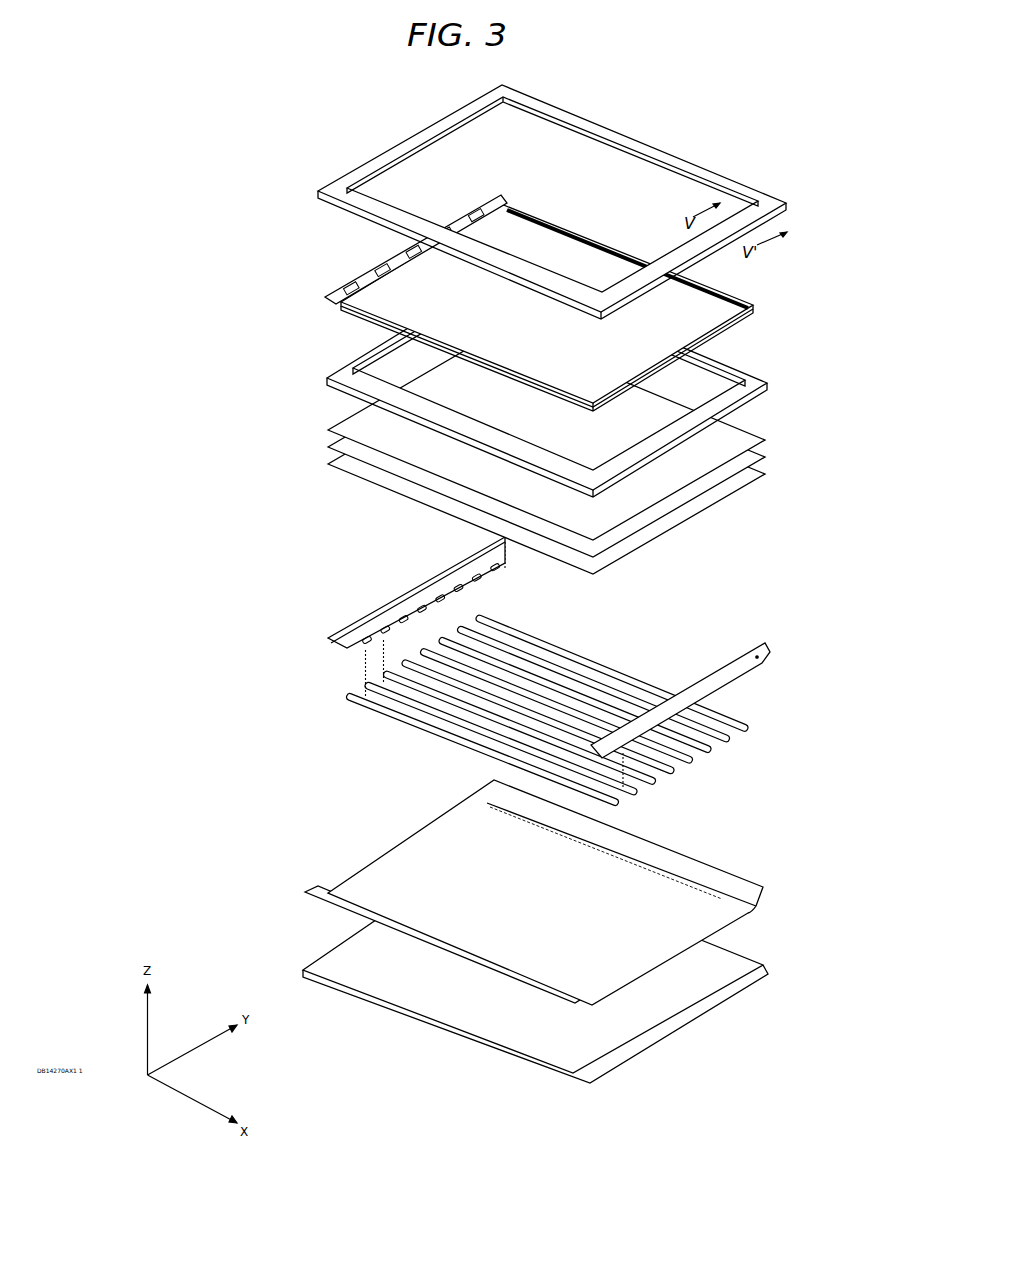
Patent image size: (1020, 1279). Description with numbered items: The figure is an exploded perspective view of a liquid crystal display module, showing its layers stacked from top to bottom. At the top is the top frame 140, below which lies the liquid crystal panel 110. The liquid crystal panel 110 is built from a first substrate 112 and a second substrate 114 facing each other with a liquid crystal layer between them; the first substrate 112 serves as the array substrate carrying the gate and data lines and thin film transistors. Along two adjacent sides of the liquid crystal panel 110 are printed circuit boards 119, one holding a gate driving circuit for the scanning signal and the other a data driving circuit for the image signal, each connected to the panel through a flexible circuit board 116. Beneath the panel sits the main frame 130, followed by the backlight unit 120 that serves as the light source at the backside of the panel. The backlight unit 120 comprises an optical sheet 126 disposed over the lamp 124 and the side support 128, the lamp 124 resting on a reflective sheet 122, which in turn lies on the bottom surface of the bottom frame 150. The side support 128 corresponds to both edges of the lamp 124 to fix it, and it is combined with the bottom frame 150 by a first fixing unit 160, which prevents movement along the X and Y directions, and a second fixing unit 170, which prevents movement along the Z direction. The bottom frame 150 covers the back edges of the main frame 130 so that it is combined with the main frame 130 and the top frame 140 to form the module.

The liquid crystal panel 110 is at (612, 303).
The first substrate 112 is at (722, 335).
The second substrate 114 is at (703, 317).
The flexible circuit board 116 is at (747, 300).
The printed circuit board 119 is at (717, 288).
The backlight unit 120 is at (834, 928).
The reflective sheet 122 is at (722, 878).
The lamp 124 is at (727, 718).
The optical sheet 126 is at (782, 437).
The side support 128 is at (713, 667).
The main frame 130 is at (323, 382).
The top frame 140 is at (350, 188).
The bottom frame 150 is at (760, 960).
The first fixing unit 160 is at (320, 630).
The second fixing unit 170 is at (760, 660).